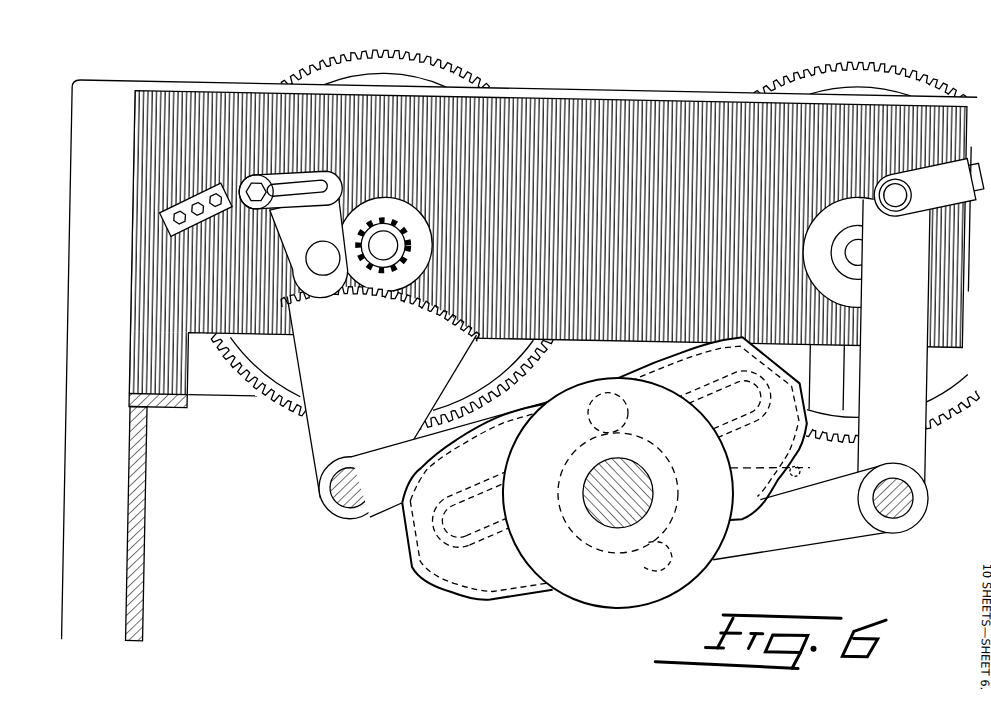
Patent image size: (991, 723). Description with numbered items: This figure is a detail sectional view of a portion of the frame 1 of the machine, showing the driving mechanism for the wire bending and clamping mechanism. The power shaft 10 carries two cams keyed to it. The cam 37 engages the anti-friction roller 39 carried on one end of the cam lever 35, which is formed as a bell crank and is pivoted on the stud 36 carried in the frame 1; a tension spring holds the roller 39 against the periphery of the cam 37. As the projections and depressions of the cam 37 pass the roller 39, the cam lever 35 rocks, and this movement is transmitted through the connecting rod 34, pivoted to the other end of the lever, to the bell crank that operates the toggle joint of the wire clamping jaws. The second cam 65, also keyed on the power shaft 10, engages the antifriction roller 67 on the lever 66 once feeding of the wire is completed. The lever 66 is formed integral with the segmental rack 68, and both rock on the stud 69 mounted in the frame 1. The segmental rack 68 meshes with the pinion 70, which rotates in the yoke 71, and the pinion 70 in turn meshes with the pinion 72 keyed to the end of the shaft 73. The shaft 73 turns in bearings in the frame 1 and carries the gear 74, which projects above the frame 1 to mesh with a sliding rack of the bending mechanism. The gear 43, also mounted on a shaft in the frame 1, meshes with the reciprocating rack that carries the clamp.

The frame 1 is at (80, 231).
The power shaft 10 is at (618, 497).
The connecting rod 34 is at (934, 166).
The cam lever 35 is at (918, 372).
The stud 36 is at (908, 500).
The cam 37 is at (800, 474).
The anti-friction roller 39 is at (631, 565).
The gear 43 is at (850, 70).
The cam 65 is at (617, 477).
The lever 66 is at (391, 506).
The antifriction roller 67 is at (600, 398).
The segmental rack 68 is at (372, 424).
The stud 69 is at (348, 516).
The pinion 70 is at (303, 302).
The yoke 71 is at (288, 234).
The pinion 72 is at (383, 256).
The shaft 73 is at (384, 260).
The gear 74 is at (432, 74).